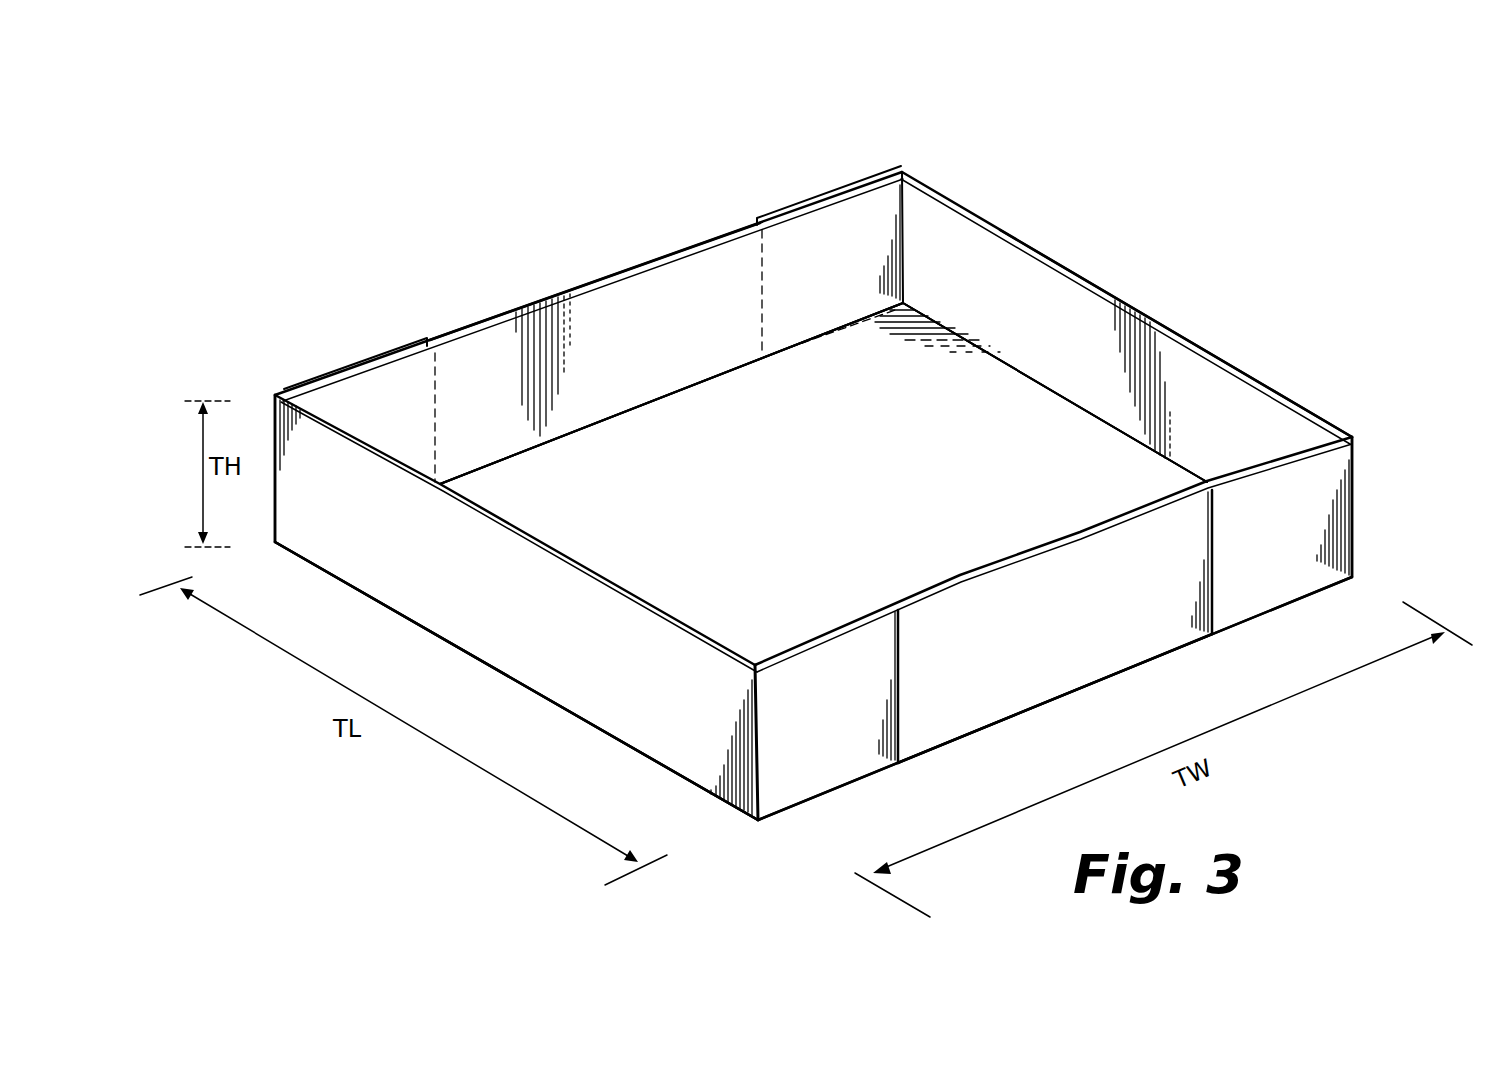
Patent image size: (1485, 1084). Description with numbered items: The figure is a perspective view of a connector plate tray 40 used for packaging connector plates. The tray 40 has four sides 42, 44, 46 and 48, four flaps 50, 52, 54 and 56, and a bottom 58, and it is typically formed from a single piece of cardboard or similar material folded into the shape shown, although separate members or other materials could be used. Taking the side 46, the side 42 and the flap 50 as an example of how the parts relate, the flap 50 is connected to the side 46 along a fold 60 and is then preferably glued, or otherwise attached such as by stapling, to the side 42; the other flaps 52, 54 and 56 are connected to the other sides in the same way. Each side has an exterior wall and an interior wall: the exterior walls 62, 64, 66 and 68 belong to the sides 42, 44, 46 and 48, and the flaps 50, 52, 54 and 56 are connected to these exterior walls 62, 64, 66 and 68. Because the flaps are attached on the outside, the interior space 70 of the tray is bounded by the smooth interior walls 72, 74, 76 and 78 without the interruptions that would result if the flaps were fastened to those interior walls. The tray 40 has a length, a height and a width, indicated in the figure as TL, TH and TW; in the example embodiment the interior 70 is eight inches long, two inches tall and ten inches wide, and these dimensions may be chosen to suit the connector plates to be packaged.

The connector plate tray 40 is at (1121, 688).
The side 42 is at (1053, 628).
The side 44 is at (589, 328).
The side 46 is at (516, 607).
The side 48 is at (1116, 374).
The flap 50 is at (856, 686).
The flap 52 is at (1232, 562).
The flap 54 is at (385, 351).
The flap 56 is at (812, 197).
The bottom 58 is at (823, 420).
The fold 60 is at (760, 777).
The exterior wall 62 is at (942, 717).
The exterior wall 64 is at (548, 298).
The exterior wall 66 is at (402, 588).
The exterior wall 68 is at (1193, 339).
The interior space 70 is at (926, 478).
The interior wall 72 is at (1078, 527).
The interior wall 74 is at (670, 287).
The interior wall 76 is at (568, 538).
The interior wall 78 is at (1080, 308).